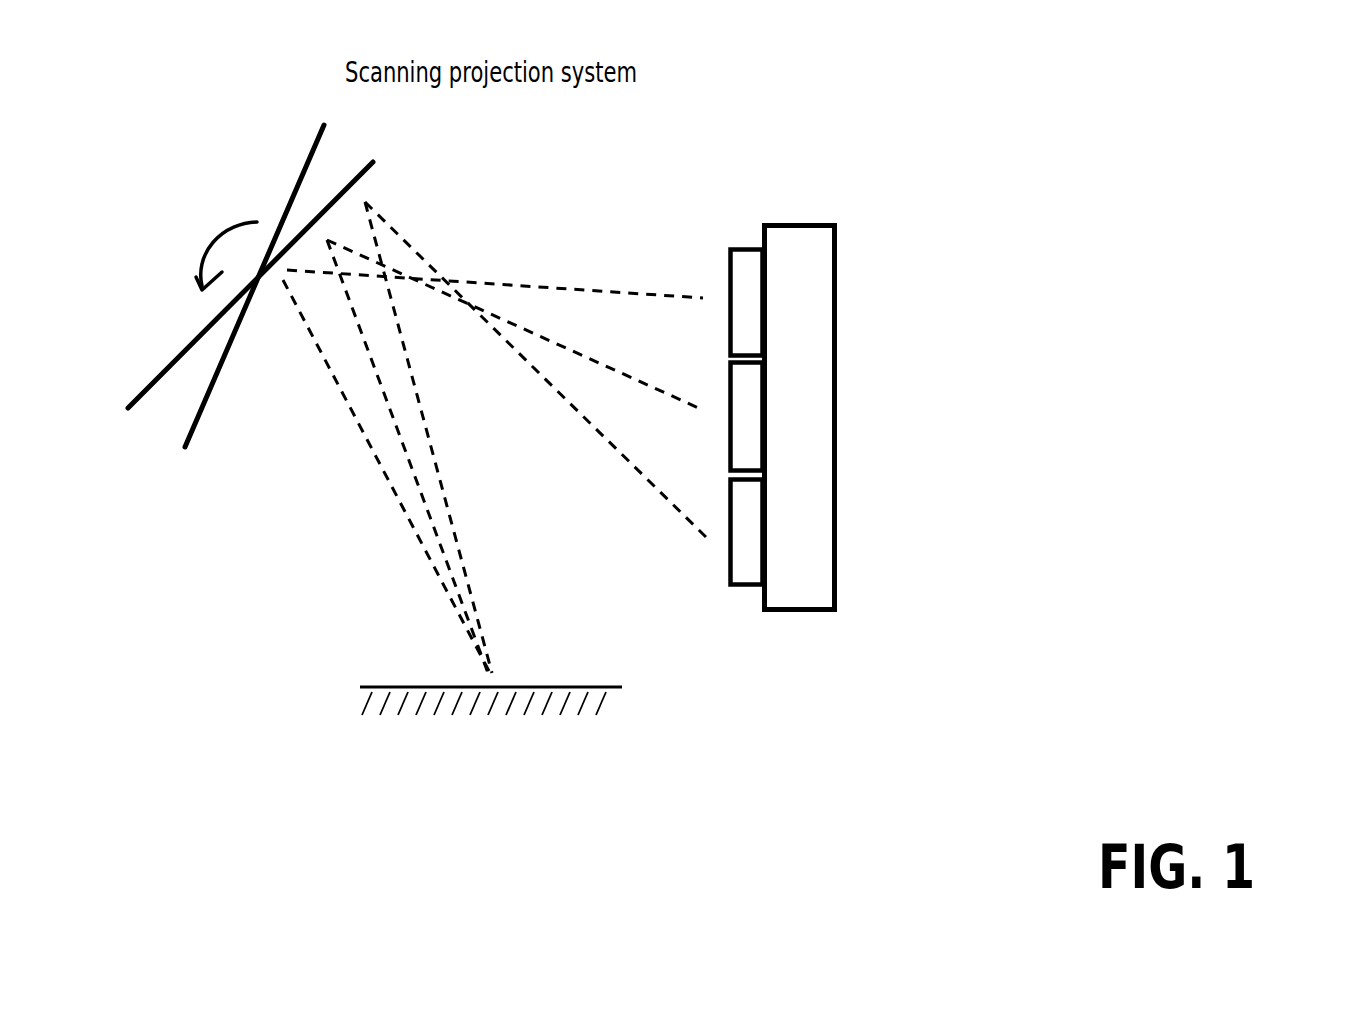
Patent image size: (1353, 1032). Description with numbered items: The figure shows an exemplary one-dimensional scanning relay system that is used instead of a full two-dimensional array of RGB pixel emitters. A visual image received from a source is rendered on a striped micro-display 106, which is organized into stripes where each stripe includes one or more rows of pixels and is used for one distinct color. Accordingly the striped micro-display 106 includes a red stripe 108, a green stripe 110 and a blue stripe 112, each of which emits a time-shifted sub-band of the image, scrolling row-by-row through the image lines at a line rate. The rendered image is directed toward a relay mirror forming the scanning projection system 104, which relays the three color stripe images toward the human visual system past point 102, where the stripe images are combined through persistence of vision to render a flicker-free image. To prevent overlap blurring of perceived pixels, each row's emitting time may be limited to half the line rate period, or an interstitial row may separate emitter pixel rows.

The point past which the human visual system perceives the image 102 is at (492, 667).
The scanning projection system 104 is at (297, 130).
The striped micro-display 106 is at (860, 565).
The red stripe 108 is at (747, 278).
The green stripe 110 is at (747, 398).
The blue stripe 112 is at (747, 517).